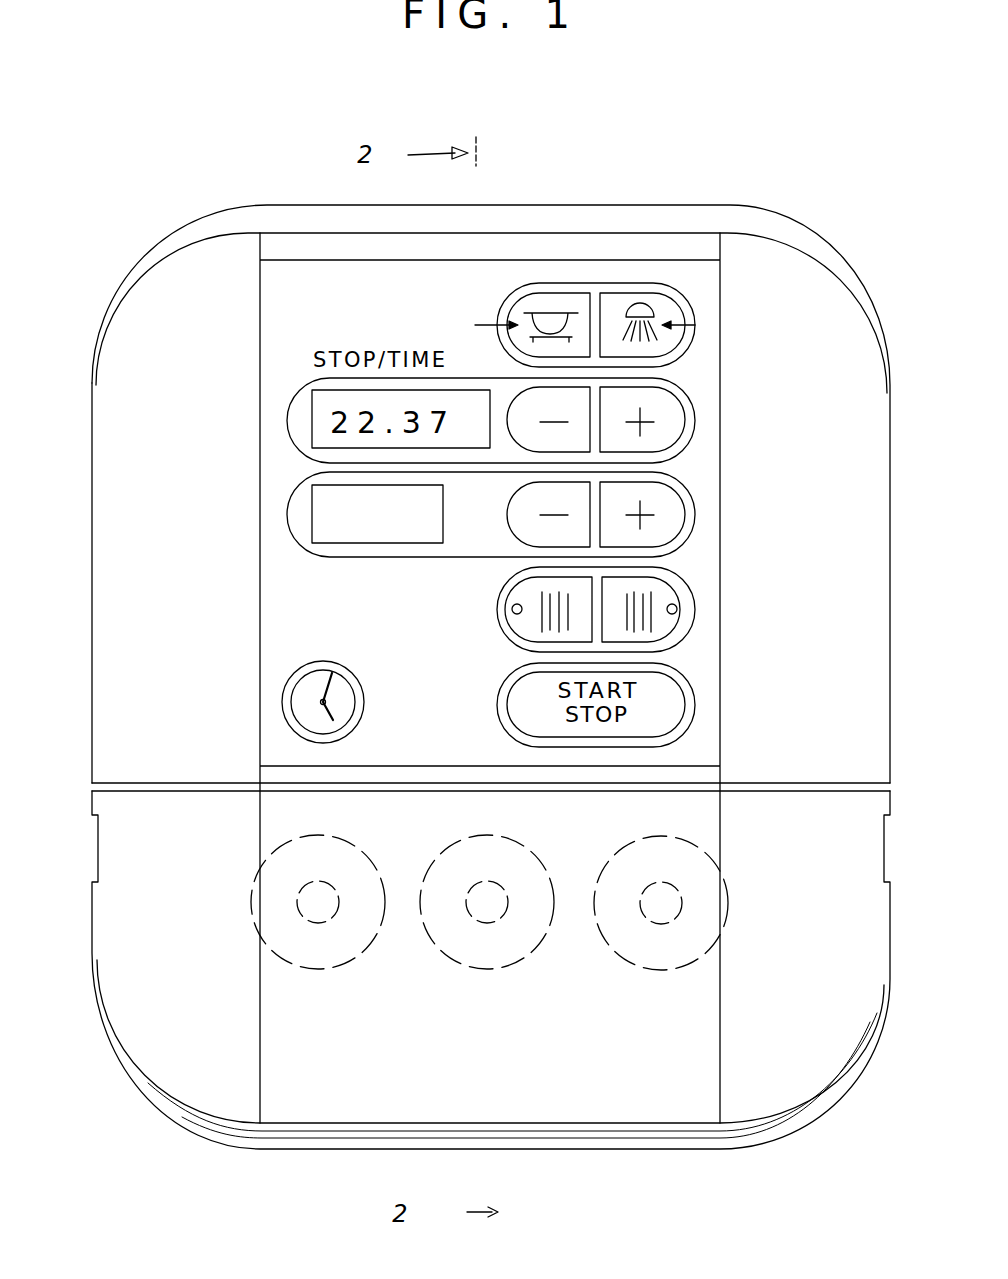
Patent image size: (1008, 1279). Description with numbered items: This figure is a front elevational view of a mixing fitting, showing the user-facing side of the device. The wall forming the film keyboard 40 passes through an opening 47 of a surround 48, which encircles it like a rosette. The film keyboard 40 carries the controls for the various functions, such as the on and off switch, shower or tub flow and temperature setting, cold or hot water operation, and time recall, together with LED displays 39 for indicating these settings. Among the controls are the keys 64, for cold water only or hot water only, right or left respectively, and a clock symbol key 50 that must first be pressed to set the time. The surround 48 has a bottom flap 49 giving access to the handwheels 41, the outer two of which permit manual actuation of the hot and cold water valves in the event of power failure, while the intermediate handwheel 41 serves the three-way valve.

The LED displays 39 is at (323, 525).
The film keyboard 40 is at (706, 383).
The handwheels 41 is at (357, 935).
The opening 47 is at (718, 500).
The surround 48 is at (807, 300).
The bottom flap 49 is at (781, 1084).
The clock symbol key 50 is at (298, 707).
The keys 64 is at (523, 624).